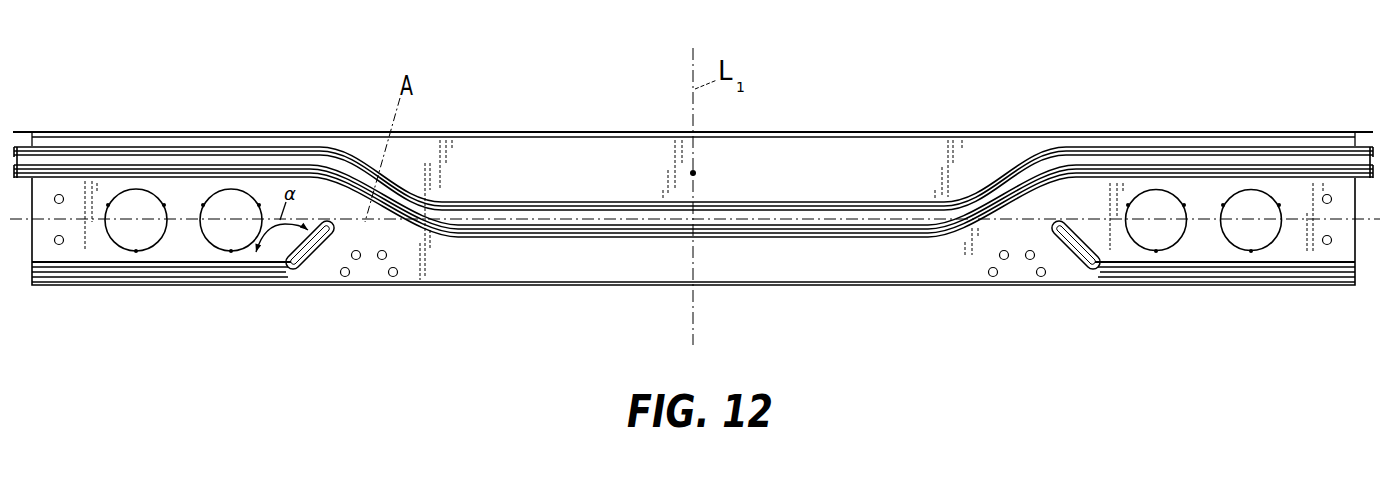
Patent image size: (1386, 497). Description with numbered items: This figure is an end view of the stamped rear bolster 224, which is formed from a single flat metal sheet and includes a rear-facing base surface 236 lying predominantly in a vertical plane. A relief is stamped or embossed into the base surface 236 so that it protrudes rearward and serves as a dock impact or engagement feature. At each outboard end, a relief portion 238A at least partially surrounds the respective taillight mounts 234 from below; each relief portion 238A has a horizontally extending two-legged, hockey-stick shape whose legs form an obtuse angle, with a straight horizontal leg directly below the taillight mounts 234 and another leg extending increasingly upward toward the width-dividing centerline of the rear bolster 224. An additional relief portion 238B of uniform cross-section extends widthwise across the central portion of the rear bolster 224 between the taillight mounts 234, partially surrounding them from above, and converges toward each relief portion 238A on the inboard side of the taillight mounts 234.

The rear bolster 224 is at (297, 72).
The taillight mounts 234 is at (208, 242).
The rear-facing base surface 236 is at (850, 177).
The relief portion 238A is at (225, 267).
The additional relief portion 238B is at (568, 203).